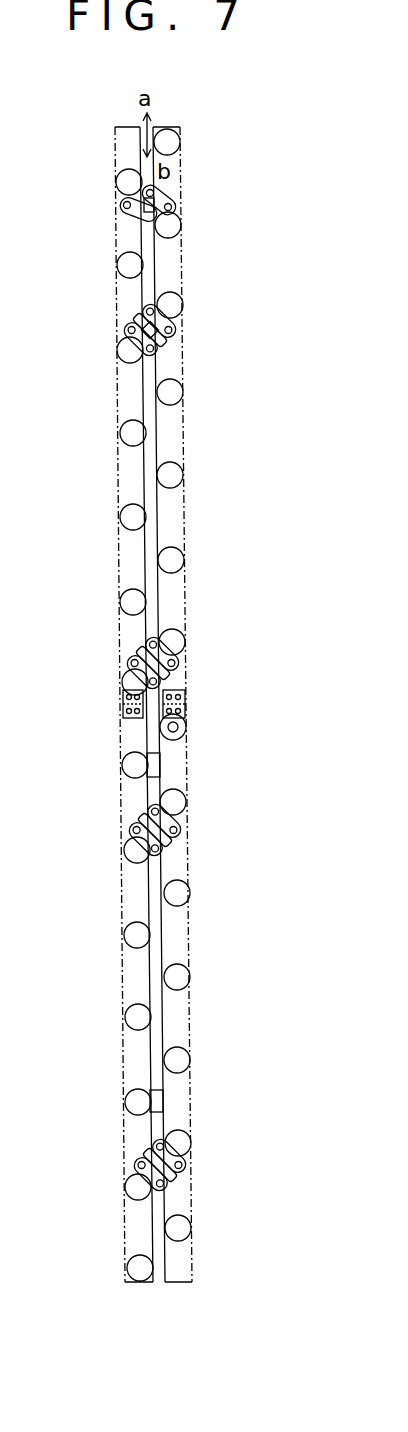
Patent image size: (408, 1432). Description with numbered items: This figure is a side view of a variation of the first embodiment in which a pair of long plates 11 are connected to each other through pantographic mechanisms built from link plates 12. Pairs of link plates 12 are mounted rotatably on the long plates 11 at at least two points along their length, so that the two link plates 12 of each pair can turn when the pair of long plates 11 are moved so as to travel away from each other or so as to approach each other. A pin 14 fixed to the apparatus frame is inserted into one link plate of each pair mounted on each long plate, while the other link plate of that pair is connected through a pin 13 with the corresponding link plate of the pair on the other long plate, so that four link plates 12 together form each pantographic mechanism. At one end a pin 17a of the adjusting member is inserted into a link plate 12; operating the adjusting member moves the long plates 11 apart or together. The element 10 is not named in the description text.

The balls 10 is at (120, 522).
The long plates 11 is at (120, 473).
The link plates 12 is at (178, 198).
The pin 13 is at (128, 207).
The pin 14 is at (150, 358).
The pin 17a is at (153, 189).